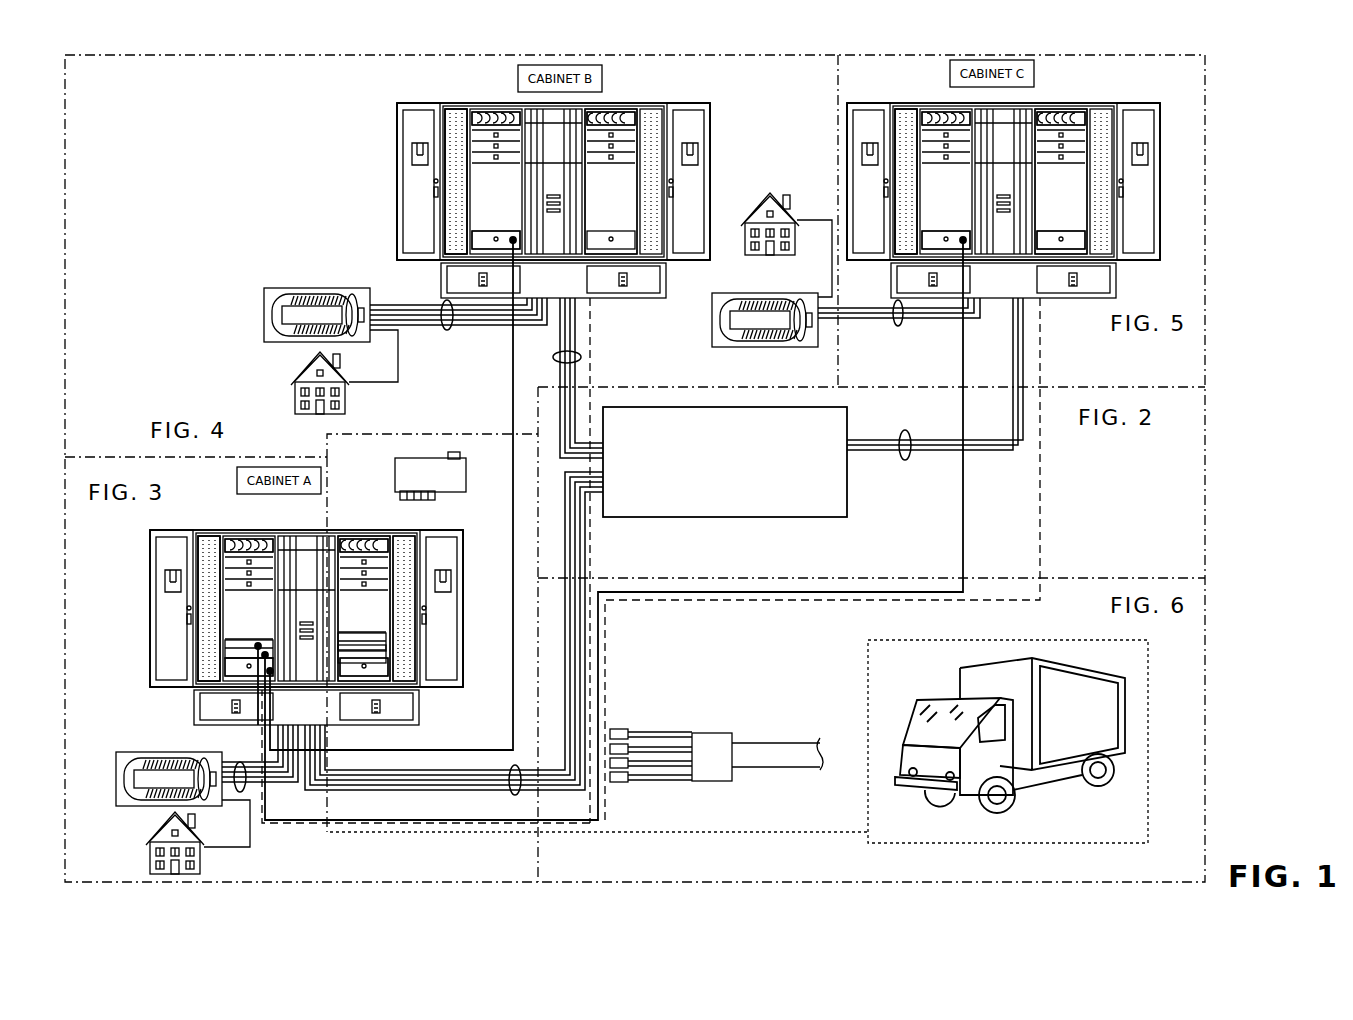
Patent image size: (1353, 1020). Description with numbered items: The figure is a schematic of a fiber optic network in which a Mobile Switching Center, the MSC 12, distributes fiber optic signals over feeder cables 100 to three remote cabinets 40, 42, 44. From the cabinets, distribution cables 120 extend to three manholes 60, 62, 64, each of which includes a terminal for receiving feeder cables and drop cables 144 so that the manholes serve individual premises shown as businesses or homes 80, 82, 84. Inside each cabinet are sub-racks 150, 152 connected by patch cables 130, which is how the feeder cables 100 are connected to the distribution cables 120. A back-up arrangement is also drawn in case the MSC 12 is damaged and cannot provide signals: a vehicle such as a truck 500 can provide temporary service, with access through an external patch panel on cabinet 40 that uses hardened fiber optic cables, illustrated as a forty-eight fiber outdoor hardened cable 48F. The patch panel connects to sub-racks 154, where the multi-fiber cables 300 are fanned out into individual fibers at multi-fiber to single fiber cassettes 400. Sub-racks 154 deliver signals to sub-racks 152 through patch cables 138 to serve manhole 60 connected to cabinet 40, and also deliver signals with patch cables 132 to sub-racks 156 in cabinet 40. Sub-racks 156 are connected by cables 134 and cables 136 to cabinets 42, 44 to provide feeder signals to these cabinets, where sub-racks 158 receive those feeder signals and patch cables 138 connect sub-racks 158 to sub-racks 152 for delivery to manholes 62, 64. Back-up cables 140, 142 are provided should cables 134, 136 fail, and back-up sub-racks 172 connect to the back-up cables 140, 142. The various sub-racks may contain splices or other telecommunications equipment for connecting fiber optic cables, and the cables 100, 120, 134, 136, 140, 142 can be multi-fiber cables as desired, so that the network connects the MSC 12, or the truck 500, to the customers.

The Mobile Switching Center (MSC) 12 is at (757, 518).
The cabinet 40 is at (150, 565).
The cabinet 42 is at (710, 132).
The cabinet 44 is at (1160, 132).
The manhole 60 is at (116, 760).
The manhole 62 is at (264, 312).
The manhole 64 is at (712, 315).
The home 80 is at (146, 845).
The home 82 is at (292, 375).
The home 84 is at (752, 190).
The feeder cables 100 is at (509, 768).
The distribution cables 120 is at (238, 760).
The patch cables 130 is at (367, 538).
The patch cables 132 is at (420, 658).
The cables 134 is at (512, 588).
The cables 136 is at (480, 820).
The patch cables 138 is at (900, 210).
The back-up cables 140 is at (577, 847).
The back-up cables 142 is at (415, 823).
The drop cables 144 is at (250, 847).
The sub-racks 150 is at (368, 635).
The sub-racks 152 is at (185, 585).
The sub-racks 154 is at (373, 663).
The sub-racks 156 is at (237, 668).
The sub-racks 158 is at (937, 235).
The back-up sub-racks 172 is at (1073, 240).
The multi-fiber cables 300 is at (356, 833).
The cassettes 400 is at (395, 470).
The truck 500 is at (868, 668).
The 48-fiber outdoor hardened cable 48F is at (777, 777).